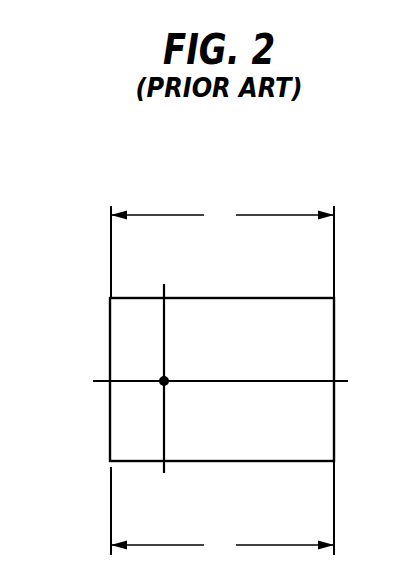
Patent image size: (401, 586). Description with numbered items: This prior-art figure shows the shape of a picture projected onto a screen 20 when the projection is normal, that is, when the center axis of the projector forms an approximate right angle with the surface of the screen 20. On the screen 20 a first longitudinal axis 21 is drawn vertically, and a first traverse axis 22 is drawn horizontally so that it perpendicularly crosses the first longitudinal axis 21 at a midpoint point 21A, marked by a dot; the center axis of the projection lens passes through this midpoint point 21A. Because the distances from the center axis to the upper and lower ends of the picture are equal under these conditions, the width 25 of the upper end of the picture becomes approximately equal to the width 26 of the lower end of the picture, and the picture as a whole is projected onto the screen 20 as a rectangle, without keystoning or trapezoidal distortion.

The screen 20 is at (235, 155).
The first longitudinal axis 21 is at (164, 326).
The midpoint point 21A is at (162, 380).
The first traverse axis 22 is at (93, 384).
The width of the upper end of the picture 25 is at (222, 251).
The width of the lower end of the picture 26 is at (222, 510).